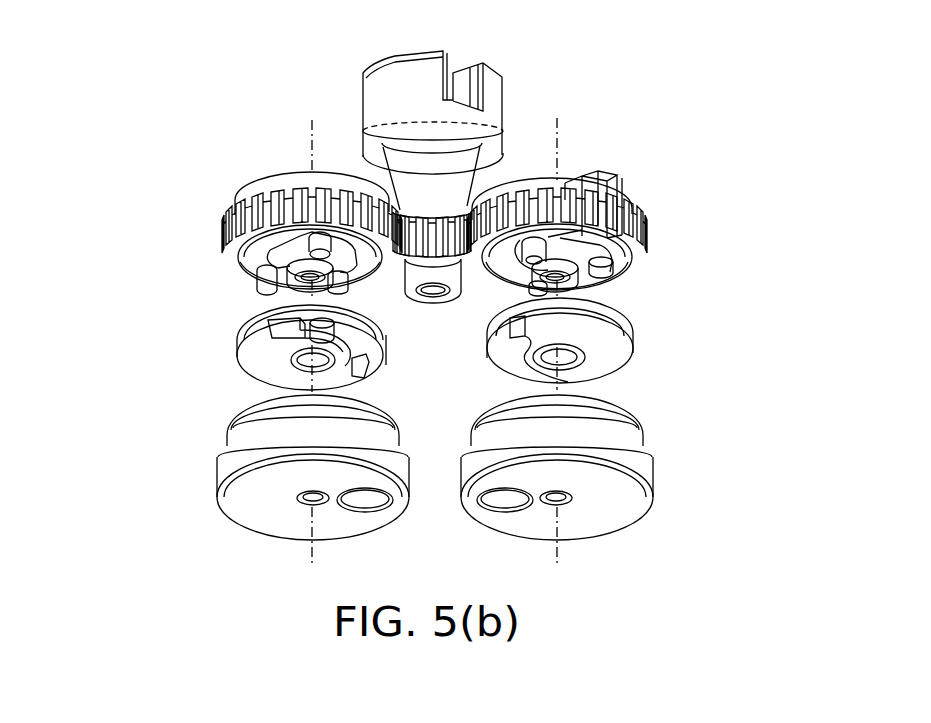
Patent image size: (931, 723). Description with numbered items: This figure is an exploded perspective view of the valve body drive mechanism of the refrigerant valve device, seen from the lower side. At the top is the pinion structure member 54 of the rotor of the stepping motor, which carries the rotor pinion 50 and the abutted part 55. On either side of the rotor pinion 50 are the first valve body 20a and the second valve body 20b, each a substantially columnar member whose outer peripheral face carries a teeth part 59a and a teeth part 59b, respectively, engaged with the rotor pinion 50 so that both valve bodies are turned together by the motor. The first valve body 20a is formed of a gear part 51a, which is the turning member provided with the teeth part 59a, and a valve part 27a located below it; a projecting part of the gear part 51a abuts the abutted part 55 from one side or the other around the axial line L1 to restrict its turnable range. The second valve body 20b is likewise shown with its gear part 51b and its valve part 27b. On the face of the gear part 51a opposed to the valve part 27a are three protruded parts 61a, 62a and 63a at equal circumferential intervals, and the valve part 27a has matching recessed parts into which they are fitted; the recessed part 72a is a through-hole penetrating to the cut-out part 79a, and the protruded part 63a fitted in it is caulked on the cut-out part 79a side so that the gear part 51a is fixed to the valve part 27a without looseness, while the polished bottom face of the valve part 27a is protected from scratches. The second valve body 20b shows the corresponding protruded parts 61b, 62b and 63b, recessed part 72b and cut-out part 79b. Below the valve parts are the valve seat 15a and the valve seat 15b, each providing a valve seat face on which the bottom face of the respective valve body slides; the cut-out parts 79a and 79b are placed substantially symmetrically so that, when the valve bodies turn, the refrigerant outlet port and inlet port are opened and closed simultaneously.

The valve seat 15a is at (618, 516).
The valve seat 15b is at (248, 514).
The first valve body 20a is at (620, 263).
The second valve body 20b is at (255, 247).
The valve part 27a is at (620, 372).
The valve part 27b is at (255, 359).
The rotor pinion 50 is at (432, 262).
The gear part 51a is at (606, 201).
The second driven gear 51b is at (269, 207).
The pinion structure member 54 is at (406, 68).
The abutted part 55 is at (467, 203).
The teeth part 59a is at (640, 213).
The teeth part 59b is at (230, 217).
The protruded part 61a is at (530, 255).
The second engagement pin 61b is at (330, 262).
The protruded part 62a is at (608, 276).
The second guide pin 62b is at (262, 290).
The protruded part 63a is at (530, 292).
The second bearing boss 63b is at (345, 278).
The recessed part 72a is at (556, 380).
The second engaging projection 72b is at (364, 360).
The cut-out part 79a is at (505, 355).
The cut-out part 79b is at (378, 349).
The axial line L1 is at (558, 153).